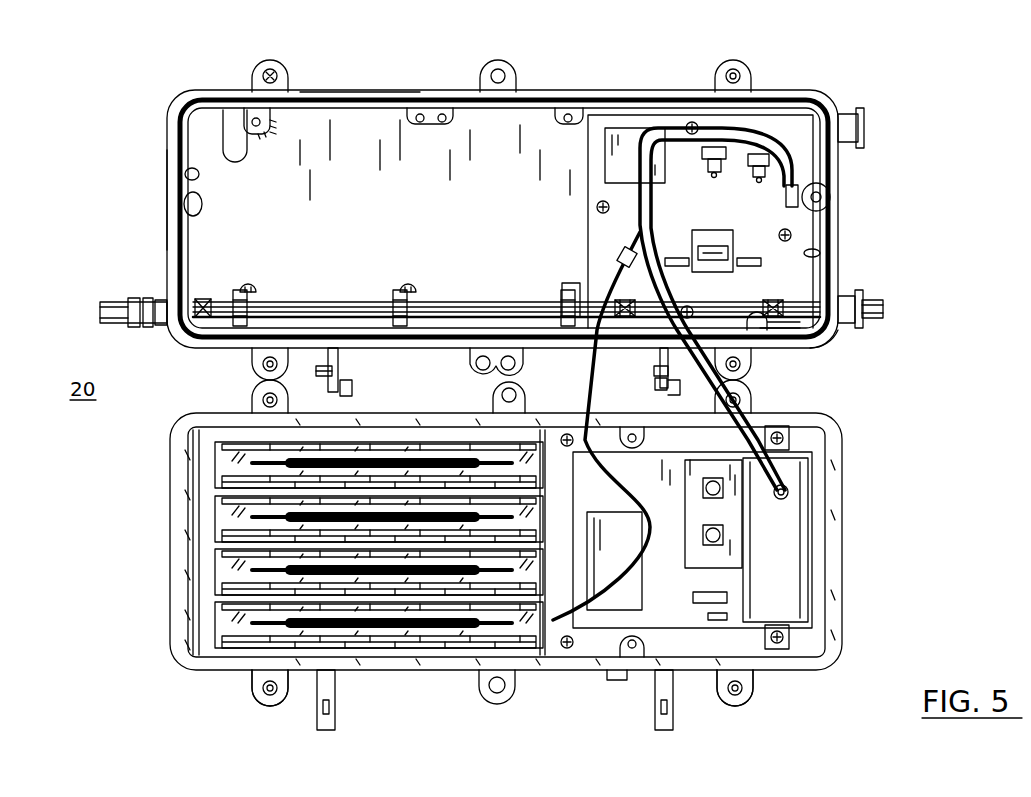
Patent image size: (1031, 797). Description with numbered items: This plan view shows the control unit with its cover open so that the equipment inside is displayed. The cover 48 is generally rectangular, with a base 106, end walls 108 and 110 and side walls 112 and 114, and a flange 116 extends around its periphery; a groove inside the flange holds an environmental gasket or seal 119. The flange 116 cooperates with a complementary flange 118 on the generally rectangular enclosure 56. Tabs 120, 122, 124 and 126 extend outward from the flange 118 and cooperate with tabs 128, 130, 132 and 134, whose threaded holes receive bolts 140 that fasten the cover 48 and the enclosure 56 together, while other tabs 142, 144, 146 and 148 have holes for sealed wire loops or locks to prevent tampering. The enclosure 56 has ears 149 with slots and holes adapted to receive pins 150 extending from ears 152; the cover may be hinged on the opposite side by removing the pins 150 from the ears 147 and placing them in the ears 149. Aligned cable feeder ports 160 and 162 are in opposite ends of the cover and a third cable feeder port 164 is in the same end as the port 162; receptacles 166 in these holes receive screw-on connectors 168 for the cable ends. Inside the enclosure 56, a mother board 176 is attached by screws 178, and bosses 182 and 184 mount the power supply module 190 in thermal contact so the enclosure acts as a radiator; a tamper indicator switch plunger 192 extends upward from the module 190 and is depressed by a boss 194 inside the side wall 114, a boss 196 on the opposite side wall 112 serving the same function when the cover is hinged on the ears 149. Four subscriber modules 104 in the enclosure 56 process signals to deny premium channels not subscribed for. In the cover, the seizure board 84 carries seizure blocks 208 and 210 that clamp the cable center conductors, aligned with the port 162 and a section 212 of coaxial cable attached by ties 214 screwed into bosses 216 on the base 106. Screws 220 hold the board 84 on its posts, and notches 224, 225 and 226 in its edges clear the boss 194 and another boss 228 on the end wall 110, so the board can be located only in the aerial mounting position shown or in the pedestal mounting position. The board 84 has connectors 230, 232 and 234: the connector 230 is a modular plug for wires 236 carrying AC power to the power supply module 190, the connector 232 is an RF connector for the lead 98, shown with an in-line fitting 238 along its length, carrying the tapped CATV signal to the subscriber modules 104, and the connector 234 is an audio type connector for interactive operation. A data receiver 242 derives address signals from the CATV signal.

The cover 48 is at (197, 90).
The enclosure 56 is at (175, 500).
The seizure board 84 is at (800, 279).
The lead 98 is at (652, 200).
The subscriber modules 104 is at (215, 470).
The base 106 is at (332, 160).
The end wall 108 is at (186, 184).
The end wall 110 is at (822, 253).
The side wall 112 is at (372, 118).
The side wall 114 is at (322, 318).
The flange 116 is at (826, 98).
The complementary flange 118 is at (843, 528).
The environmental gasket or seal 119 is at (180, 122).
The tab 120 is at (268, 700).
The tab 122 is at (742, 700).
The tab 124 is at (262, 400).
The tab 126 is at (752, 400).
The tab 128 is at (270, 60).
The tab 130 is at (726, 62).
The tab 132 is at (262, 368).
The tab 134 is at (748, 368).
The bolts 140 is at (262, 402).
The tab 142 is at (505, 64).
The tab 144 is at (472, 364).
The tab 146 is at (500, 398).
The ears 147 is at (333, 350).
The tab 148 is at (497, 697).
The ears 149 is at (328, 730).
The pins 150 is at (335, 385).
The ears 152 is at (340, 364).
The cable feeder port 160 is at (100, 310).
The cable feeder port 162 is at (884, 310).
The third cable feeder port 164 is at (864, 128).
The receptacles 166 is at (862, 322).
The screw-on connectors 168 is at (134, 327).
The mother board 176 is at (678, 628).
The screws 178 is at (565, 434).
The boss 182 is at (792, 438).
The boss 184 is at (792, 637).
The power supply module 190 is at (777, 580).
The tamper indicator switch plunger 192 is at (792, 480).
The boss 194 is at (832, 338).
The boss 196 is at (232, 150).
The seizure block 208 is at (773, 305).
The seizure block 210 is at (638, 306).
The section of coaxial cable 212 is at (302, 300).
The ties 214 is at (240, 290).
The bosses 216 is at (254, 290).
The screws 220 is at (690, 122).
The notch 224 is at (812, 204).
The notch 225 is at (570, 282).
The notch 226 is at (775, 326).
The boss 228 is at (812, 190).
The connector 230 is at (800, 194).
The RF connector 232 is at (760, 152).
The audio type connector 234 is at (715, 146).
The wires 236 is at (632, 160).
The connector 238 is at (618, 262).
The data receiver 242 is at (725, 536).